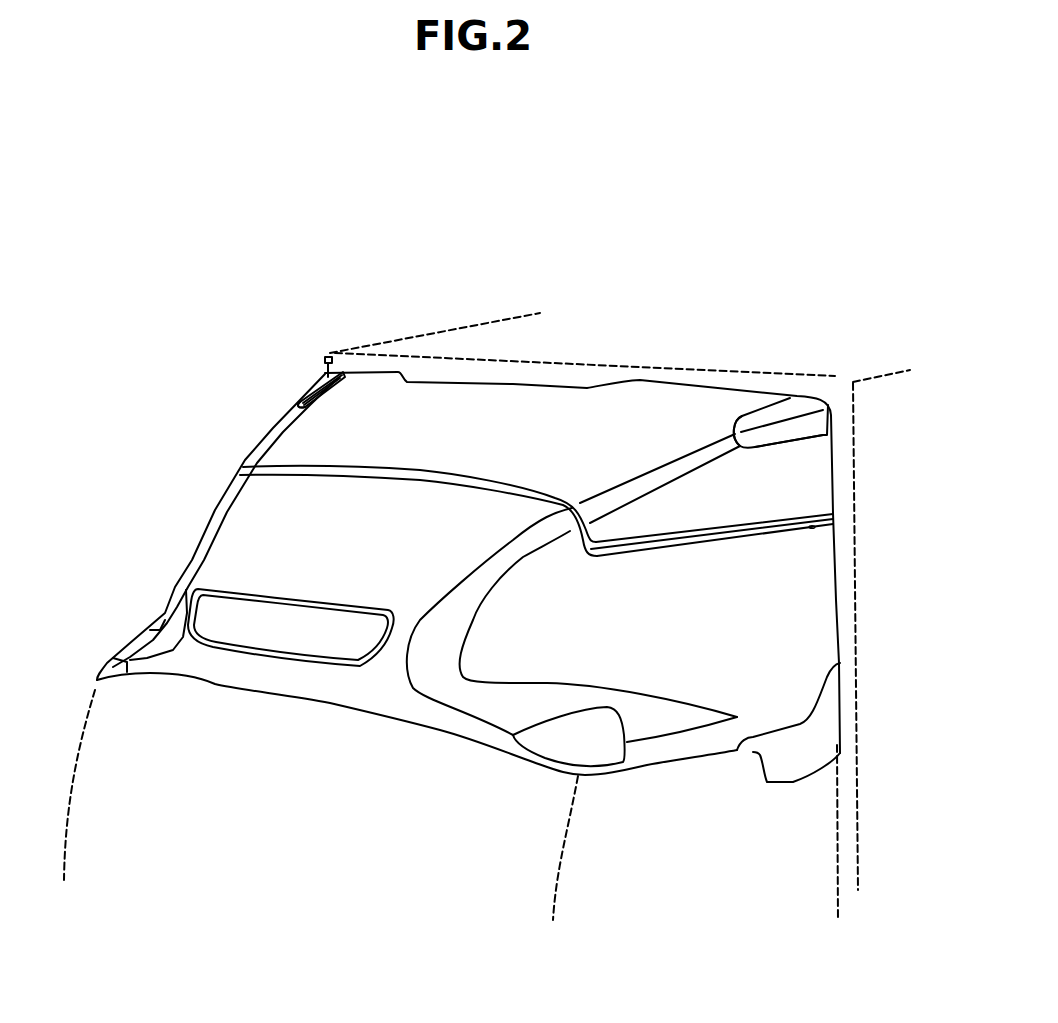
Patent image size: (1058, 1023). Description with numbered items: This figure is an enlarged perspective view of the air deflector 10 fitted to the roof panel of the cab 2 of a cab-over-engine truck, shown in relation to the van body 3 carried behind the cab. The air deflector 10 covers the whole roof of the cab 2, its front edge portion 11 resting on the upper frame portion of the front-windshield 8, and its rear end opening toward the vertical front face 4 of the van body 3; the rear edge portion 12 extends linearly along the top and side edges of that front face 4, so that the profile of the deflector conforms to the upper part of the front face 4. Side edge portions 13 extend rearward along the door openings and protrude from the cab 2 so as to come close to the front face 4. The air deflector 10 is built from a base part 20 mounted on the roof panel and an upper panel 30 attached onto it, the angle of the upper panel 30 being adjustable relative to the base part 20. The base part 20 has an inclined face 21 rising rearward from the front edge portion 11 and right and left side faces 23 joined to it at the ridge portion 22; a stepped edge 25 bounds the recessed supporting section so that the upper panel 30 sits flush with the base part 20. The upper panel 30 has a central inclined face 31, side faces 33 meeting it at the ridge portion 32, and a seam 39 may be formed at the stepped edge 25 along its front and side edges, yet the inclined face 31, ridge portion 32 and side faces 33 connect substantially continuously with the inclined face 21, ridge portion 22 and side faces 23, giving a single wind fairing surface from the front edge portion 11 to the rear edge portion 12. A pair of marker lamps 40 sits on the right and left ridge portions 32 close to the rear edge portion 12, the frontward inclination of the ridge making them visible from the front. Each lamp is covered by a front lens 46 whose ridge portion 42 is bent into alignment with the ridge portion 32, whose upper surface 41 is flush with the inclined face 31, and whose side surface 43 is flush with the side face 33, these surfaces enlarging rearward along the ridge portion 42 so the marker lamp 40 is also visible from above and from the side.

The cab 2 is at (790, 912).
The van body 3 is at (591, 328).
The front face 4 is at (843, 407).
The front-windshield 8 is at (223, 845).
The air deflector 10 is at (125, 400).
The front edge portion 11 is at (225, 668).
The rear edge portion 12 is at (657, 383).
The side edge portion 13 is at (692, 745).
The base part 20 is at (192, 510).
The inclined face 21 is at (320, 540).
The ridge portion 22 is at (183, 575).
The side face 23 is at (778, 636).
The stepped edge 25 is at (817, 530).
The upper panel 30 is at (250, 416).
The inclined face 31 is at (447, 412).
The ridge portion 32 is at (282, 418).
The side face 33 is at (730, 508).
The seam 39 is at (849, 518).
The marker lamp 40 is at (304, 352).
The upper surface 41 is at (344, 355).
The ridge portion 42 is at (307, 390).
The side surface 43 is at (810, 430).
The front lens 46 is at (355, 350).